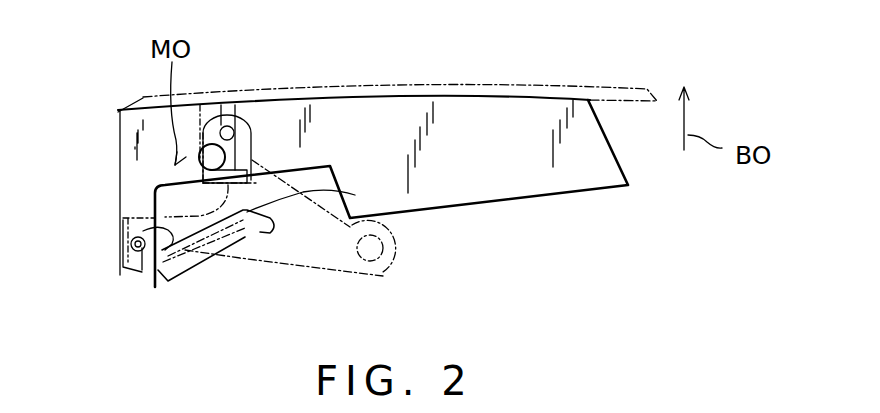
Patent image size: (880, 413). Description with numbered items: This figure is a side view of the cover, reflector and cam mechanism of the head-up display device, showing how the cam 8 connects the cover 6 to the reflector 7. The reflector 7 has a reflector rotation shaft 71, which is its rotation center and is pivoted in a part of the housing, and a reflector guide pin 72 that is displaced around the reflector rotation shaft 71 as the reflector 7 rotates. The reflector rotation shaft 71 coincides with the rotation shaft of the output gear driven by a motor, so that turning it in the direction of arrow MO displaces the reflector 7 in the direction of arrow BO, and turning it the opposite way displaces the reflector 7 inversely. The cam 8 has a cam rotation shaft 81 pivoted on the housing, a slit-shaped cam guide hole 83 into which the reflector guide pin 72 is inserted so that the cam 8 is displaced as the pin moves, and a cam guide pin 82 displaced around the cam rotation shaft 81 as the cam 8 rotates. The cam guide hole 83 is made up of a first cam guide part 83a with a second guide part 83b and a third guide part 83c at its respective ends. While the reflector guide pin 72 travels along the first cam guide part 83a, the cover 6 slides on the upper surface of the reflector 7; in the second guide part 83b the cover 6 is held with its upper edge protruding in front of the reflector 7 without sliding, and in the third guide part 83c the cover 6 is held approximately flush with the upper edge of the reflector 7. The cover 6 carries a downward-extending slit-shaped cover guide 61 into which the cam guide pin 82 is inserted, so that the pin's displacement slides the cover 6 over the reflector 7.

The cover 6 is at (505, 84).
The reflector 7 is at (575, 182).
The cam 8 is at (307, 270).
The cover guide 61 is at (252, 157).
The reflector rotation shaft 71 is at (200, 162).
The reflector guide pin 72 is at (139, 268).
The cam rotation shaft 81 is at (380, 253).
The cam guide pin 82 is at (228, 126).
The cam guide hole 83 is at (228, 255).
The first cam guide part 83a is at (180, 220).
The second guide part 83b is at (130, 227).
The third guide part 83c is at (355, 195).